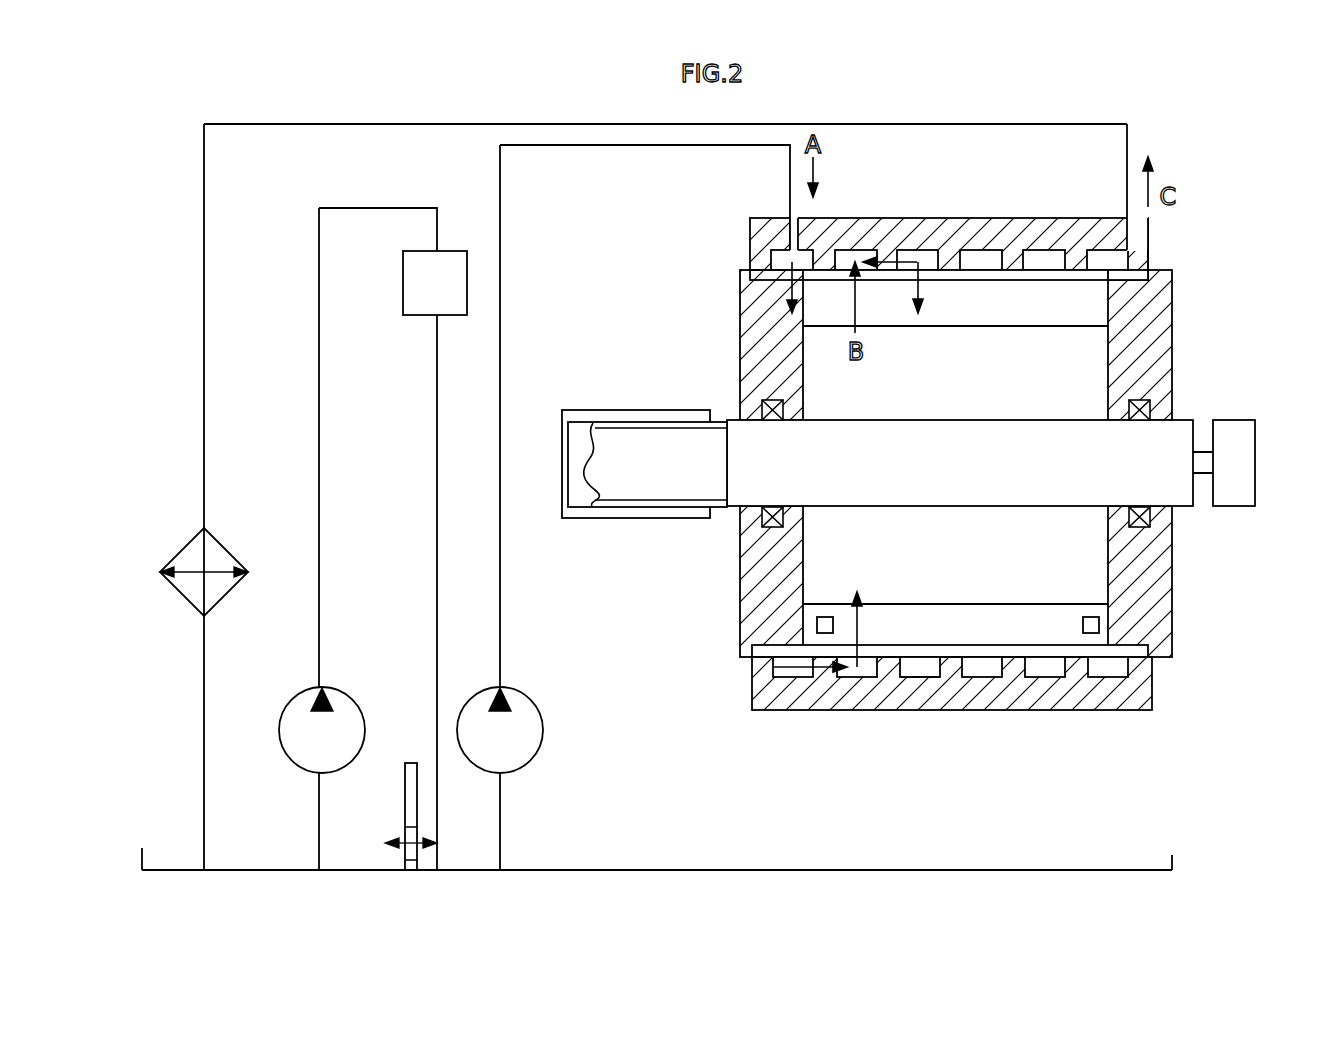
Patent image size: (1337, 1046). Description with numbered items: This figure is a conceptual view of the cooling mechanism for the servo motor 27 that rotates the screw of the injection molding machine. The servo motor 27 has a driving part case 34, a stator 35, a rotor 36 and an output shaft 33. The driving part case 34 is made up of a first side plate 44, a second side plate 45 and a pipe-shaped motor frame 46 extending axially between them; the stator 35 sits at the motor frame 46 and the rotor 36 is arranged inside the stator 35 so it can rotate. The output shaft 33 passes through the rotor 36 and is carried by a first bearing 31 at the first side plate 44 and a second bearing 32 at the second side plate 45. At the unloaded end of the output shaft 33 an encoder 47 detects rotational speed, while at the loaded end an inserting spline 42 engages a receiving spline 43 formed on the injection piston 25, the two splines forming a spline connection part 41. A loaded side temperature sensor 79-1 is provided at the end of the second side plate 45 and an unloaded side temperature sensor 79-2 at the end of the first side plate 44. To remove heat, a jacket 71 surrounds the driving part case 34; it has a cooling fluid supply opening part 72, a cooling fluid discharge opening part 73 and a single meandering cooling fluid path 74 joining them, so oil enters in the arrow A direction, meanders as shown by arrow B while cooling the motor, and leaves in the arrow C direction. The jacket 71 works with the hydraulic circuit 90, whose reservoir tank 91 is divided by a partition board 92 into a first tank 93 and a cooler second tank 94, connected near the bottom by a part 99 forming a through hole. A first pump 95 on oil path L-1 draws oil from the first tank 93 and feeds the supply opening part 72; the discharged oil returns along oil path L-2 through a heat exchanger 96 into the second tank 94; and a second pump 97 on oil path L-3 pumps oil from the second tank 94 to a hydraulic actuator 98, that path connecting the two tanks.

The hydraulic circuit 90 is at (342, 105).
The oil path L-1 is at (697, 145).
The oil path L-2 is at (204, 305).
The oil path L-3 is at (319, 345).
The hydraulic actuator 98 is at (403, 280).
The heat exchanger 96 is at (180, 548).
The second pump 97 is at (282, 716).
The first pump 95 is at (540, 755).
The partition board 92 is at (405, 800).
The part forming a through hole 99 is at (417, 833).
The second tank 94 is at (180, 858).
The reservoir tank 91 is at (688, 868).
The first tank 93 is at (1160, 858).
The cooling fluid path 74 is at (975, 245).
The cooling fluid supply opening part 72 is at (752, 233).
The cooling fluid discharge opening part 73 is at (1140, 233).
The second side plate 45 is at (740, 325).
The stator 35 is at (1097, 300).
The rotor 36 is at (1102, 553).
The first side plate 44 is at (1172, 600).
The driving part case 34 is at (1163, 657).
The jacket 71 is at (805, 710).
The motor frame 46 is at (957, 660).
The loaded side temperature sensor 79-1 is at (822, 635).
The unloaded side temperature sensor 79-2 is at (1102, 623).
The output shaft 33 is at (742, 488).
The encoder 47 is at (1255, 455).
The servo motor 27 is at (1200, 350).
The second bearing 32 is at (762, 412).
The first bearing 31 is at (1160, 385).
The injection piston 25 is at (580, 410).
The inserting spline 42 is at (603, 508).
The receiving spline 43 is at (637, 508).
The spline connection part 41 is at (583, 582).